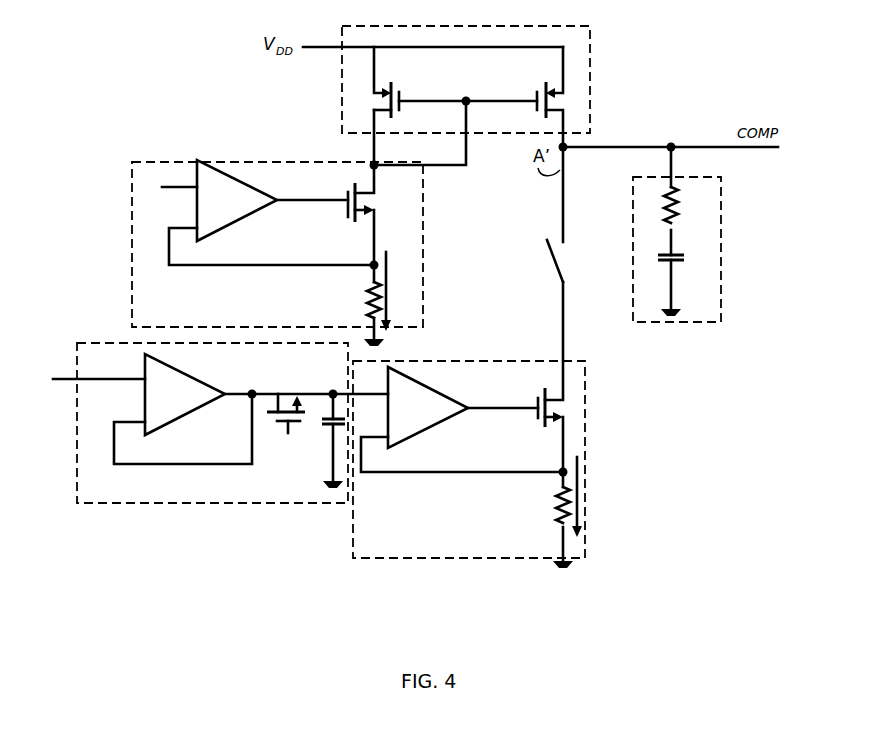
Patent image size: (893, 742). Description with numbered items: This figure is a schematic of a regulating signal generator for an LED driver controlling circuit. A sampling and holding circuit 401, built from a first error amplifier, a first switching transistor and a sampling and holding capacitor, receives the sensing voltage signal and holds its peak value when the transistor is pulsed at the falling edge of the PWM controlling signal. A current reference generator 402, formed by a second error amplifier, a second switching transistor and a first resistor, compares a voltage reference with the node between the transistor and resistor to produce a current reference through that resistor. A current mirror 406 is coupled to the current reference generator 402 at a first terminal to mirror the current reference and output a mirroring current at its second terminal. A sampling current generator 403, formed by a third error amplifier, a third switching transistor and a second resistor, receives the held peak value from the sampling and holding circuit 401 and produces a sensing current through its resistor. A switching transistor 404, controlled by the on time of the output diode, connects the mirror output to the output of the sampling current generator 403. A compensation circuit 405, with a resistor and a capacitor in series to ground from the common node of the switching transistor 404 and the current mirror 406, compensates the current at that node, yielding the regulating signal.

The sampling and holding circuit 401 is at (120, 498).
The current reference generator 402 is at (185, 313).
The sampling current generator 403 is at (434, 543).
The switching transistor 404 is at (557, 214).
The compensation circuit 405 is at (710, 302).
The current mirror 406 is at (583, 57).